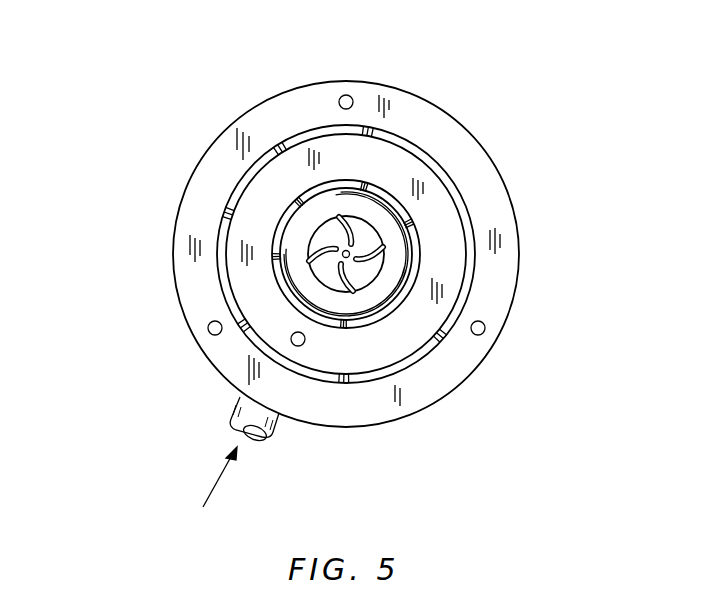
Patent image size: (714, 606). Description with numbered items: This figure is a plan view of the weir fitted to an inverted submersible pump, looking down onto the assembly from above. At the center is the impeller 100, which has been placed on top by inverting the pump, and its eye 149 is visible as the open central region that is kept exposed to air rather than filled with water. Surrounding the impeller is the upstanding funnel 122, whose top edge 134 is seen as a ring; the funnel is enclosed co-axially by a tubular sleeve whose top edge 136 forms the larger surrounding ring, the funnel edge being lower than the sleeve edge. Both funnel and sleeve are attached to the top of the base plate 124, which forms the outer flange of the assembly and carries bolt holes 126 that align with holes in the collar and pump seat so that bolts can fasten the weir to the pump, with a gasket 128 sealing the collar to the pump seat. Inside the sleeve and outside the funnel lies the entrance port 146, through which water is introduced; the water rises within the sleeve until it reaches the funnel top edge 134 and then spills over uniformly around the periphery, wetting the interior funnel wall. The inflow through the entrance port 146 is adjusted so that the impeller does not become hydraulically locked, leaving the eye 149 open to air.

The impeller 100 is at (370, 230).
The funnel 122 is at (300, 218).
The base plate 124 is at (510, 270).
The bolt holes 126 is at (339, 97).
The gasket 128 is at (232, 412).
The top edge of funnel 134 is at (450, 173).
The top edge of sleeve 136 is at (383, 190).
The entrance port 146 is at (303, 345).
The eye of the impeller 149 is at (342, 255).